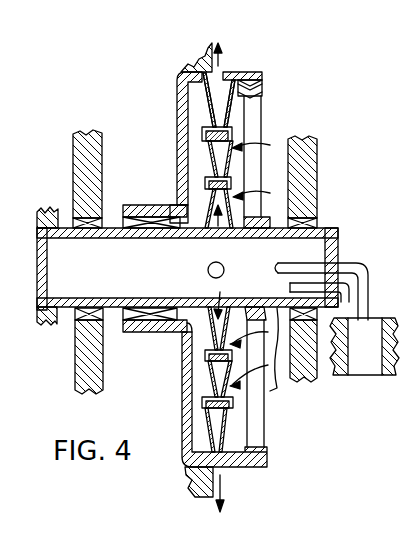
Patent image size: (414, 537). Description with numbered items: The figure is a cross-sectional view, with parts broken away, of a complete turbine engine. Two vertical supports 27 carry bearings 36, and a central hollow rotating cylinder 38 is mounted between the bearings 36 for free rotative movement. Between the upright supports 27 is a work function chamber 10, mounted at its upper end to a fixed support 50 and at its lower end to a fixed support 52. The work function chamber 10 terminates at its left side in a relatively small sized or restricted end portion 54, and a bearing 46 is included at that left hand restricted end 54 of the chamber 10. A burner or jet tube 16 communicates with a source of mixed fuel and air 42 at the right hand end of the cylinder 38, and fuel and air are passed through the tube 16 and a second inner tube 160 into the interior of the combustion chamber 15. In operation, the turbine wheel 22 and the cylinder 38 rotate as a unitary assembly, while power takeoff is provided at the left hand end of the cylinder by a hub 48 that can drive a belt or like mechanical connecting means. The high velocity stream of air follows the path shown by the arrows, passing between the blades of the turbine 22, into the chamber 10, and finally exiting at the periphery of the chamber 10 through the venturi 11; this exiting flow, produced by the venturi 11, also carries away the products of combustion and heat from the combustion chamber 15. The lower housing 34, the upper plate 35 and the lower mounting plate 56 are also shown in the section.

The work function chamber 10 is at (173, 104).
The venturi 11 is at (203, 123).
The combustion chamber 15 is at (92, 275).
The burner tube 16 is at (364, 257).
The inner tube 160 is at (357, 292).
The turbine wheel 22 is at (264, 105).
The vertical support 27 is at (93, 163).
The lower housing 34 is at (268, 455).
The top plate 35 is at (270, 84).
The bearing 36 is at (75, 222).
The hollow rotating cylinder 38 is at (278, 388).
The source of mixed fuel and air 42 is at (378, 357).
The bearing 46 is at (207, 242).
The power takeoff hub 48 is at (38, 210).
The fixed support 50 is at (194, 57).
The fixed support 52 is at (194, 497).
The restricted end portion 54 is at (135, 210).
The lower mounting plate 56 is at (117, 328).